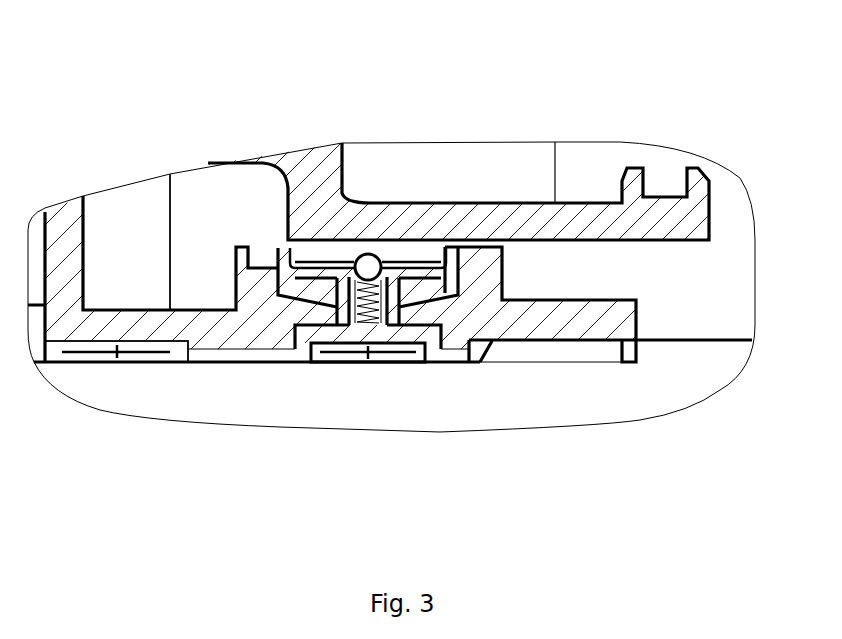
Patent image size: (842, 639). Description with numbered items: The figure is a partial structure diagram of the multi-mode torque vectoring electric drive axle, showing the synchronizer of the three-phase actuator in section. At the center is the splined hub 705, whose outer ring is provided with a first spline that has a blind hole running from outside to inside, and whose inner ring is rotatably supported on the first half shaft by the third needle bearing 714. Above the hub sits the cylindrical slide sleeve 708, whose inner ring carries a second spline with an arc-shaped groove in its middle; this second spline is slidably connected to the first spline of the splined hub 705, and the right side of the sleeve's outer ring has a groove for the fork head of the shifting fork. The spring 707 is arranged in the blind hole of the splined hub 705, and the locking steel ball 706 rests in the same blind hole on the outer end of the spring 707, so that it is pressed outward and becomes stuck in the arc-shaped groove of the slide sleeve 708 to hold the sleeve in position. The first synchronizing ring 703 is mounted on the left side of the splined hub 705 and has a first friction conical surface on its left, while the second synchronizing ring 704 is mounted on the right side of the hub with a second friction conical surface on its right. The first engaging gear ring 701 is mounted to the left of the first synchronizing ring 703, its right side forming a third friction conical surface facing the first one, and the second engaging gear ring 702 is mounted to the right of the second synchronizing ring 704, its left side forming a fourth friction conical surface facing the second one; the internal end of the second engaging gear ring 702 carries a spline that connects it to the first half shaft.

The first engaging gear ring 701 is at (267, 331).
The second engaging gear ring 702 is at (480, 320).
The first synchronizing ring 703 is at (297, 290).
The second synchronizing ring 704 is at (442, 288).
The splined hub 705 is at (387, 336).
The locking steel ball 706 is at (362, 263).
The spring 707 is at (370, 285).
The slide sleeve 708 is at (582, 223).
The third needle bearing 714 is at (352, 357).